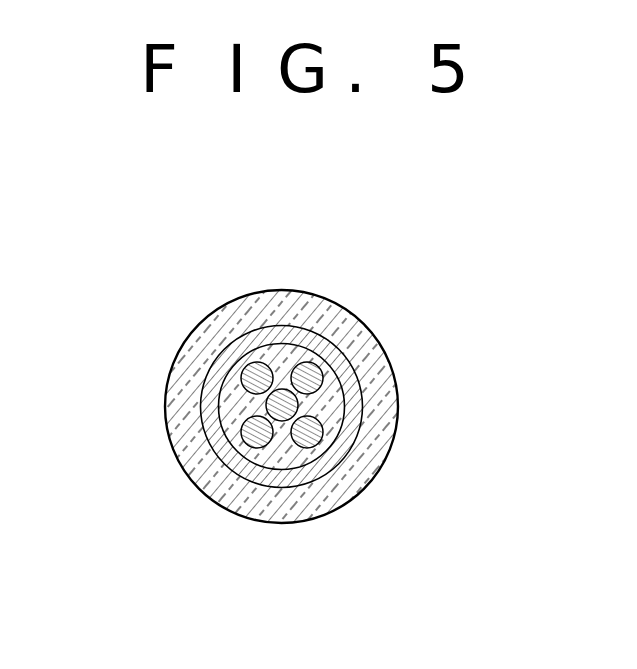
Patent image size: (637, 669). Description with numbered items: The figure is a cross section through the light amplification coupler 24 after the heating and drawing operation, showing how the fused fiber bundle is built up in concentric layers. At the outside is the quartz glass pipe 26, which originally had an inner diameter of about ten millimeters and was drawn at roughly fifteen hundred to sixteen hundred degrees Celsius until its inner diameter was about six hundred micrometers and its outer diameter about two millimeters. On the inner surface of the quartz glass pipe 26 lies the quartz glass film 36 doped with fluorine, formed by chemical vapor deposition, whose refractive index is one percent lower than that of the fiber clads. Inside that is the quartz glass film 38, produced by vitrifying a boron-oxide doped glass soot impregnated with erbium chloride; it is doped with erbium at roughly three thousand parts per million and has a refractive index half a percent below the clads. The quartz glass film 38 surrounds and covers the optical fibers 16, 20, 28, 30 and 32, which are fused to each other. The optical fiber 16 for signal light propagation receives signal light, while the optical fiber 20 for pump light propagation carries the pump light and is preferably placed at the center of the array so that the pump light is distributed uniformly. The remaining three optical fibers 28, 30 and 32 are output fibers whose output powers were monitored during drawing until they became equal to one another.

The optical fiber for signal light propagation 16 is at (309, 448).
The optical fiber for pump light propagation 20 is at (283, 389).
The light amplification coupler 24 is at (319, 400).
The quartz glass pipe 26 is at (393, 447).
The optical fiber 28 is at (307, 362).
The optical fiber 30 is at (251, 362).
The optical fiber 32 is at (258, 448).
The quartz glass film doped with F 36 is at (340, 418).
The quartz glass film doped with Er and B2O3 38 is at (345, 404).